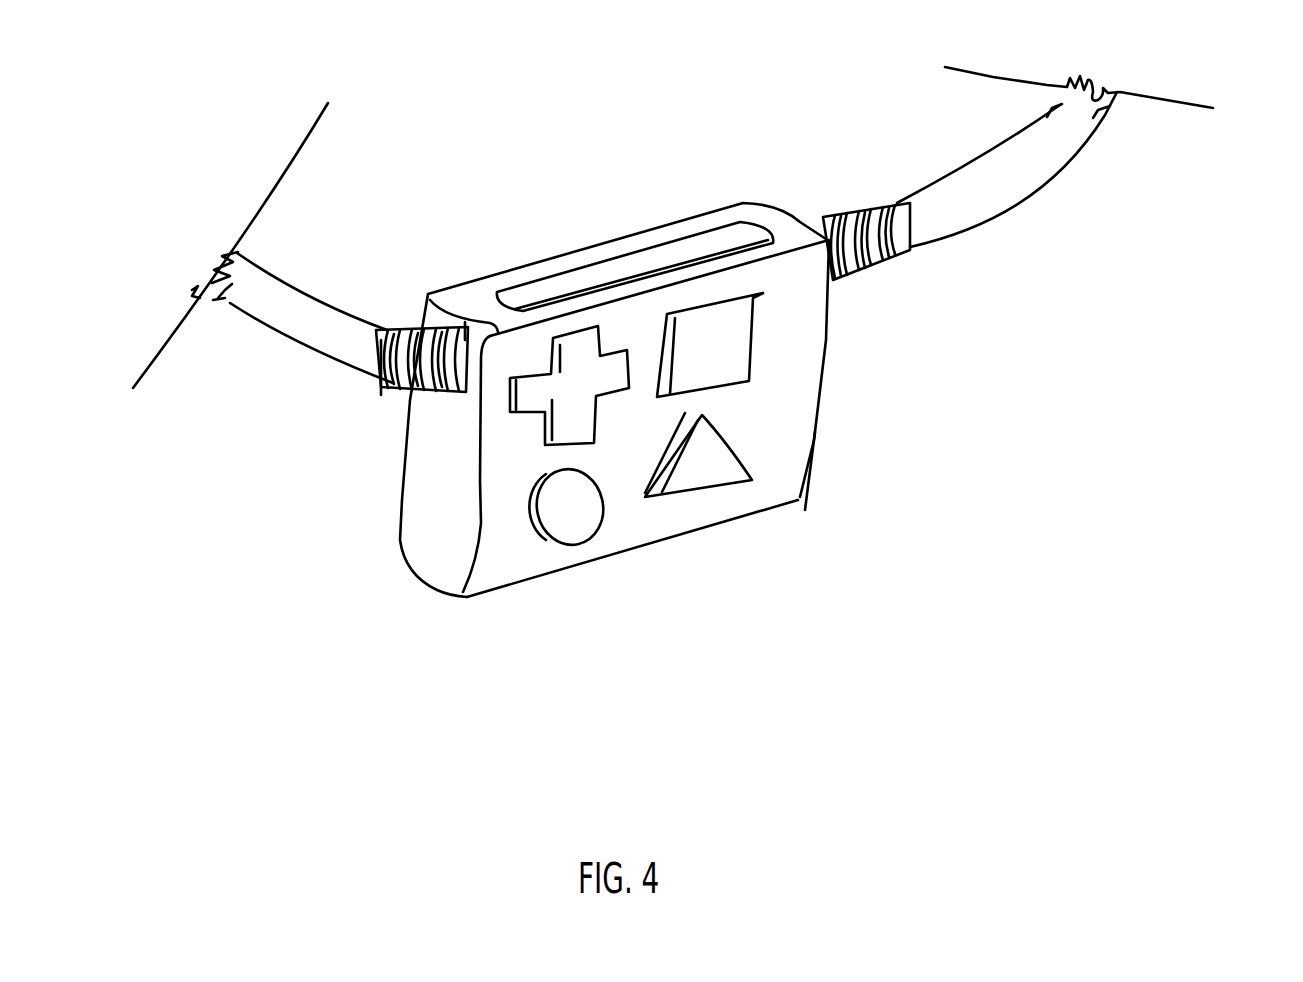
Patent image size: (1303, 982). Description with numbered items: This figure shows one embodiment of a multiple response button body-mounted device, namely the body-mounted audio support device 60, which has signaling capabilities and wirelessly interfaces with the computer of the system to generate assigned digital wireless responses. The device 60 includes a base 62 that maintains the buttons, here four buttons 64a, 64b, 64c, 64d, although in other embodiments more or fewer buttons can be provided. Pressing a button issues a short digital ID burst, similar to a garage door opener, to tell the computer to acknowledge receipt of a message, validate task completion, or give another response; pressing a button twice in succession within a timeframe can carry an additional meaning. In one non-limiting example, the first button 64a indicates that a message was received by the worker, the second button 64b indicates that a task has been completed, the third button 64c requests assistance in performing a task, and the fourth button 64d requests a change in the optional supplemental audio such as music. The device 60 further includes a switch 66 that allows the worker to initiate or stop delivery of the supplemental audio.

The body-mounted audio support device 60 is at (636, 48).
The base 62 is at (412, 514).
The first button 64a is at (545, 412).
The second button 64b is at (727, 345).
The third button 64c is at (557, 513).
The fourth button 64d is at (693, 462).
The switch 66 is at (645, 265).